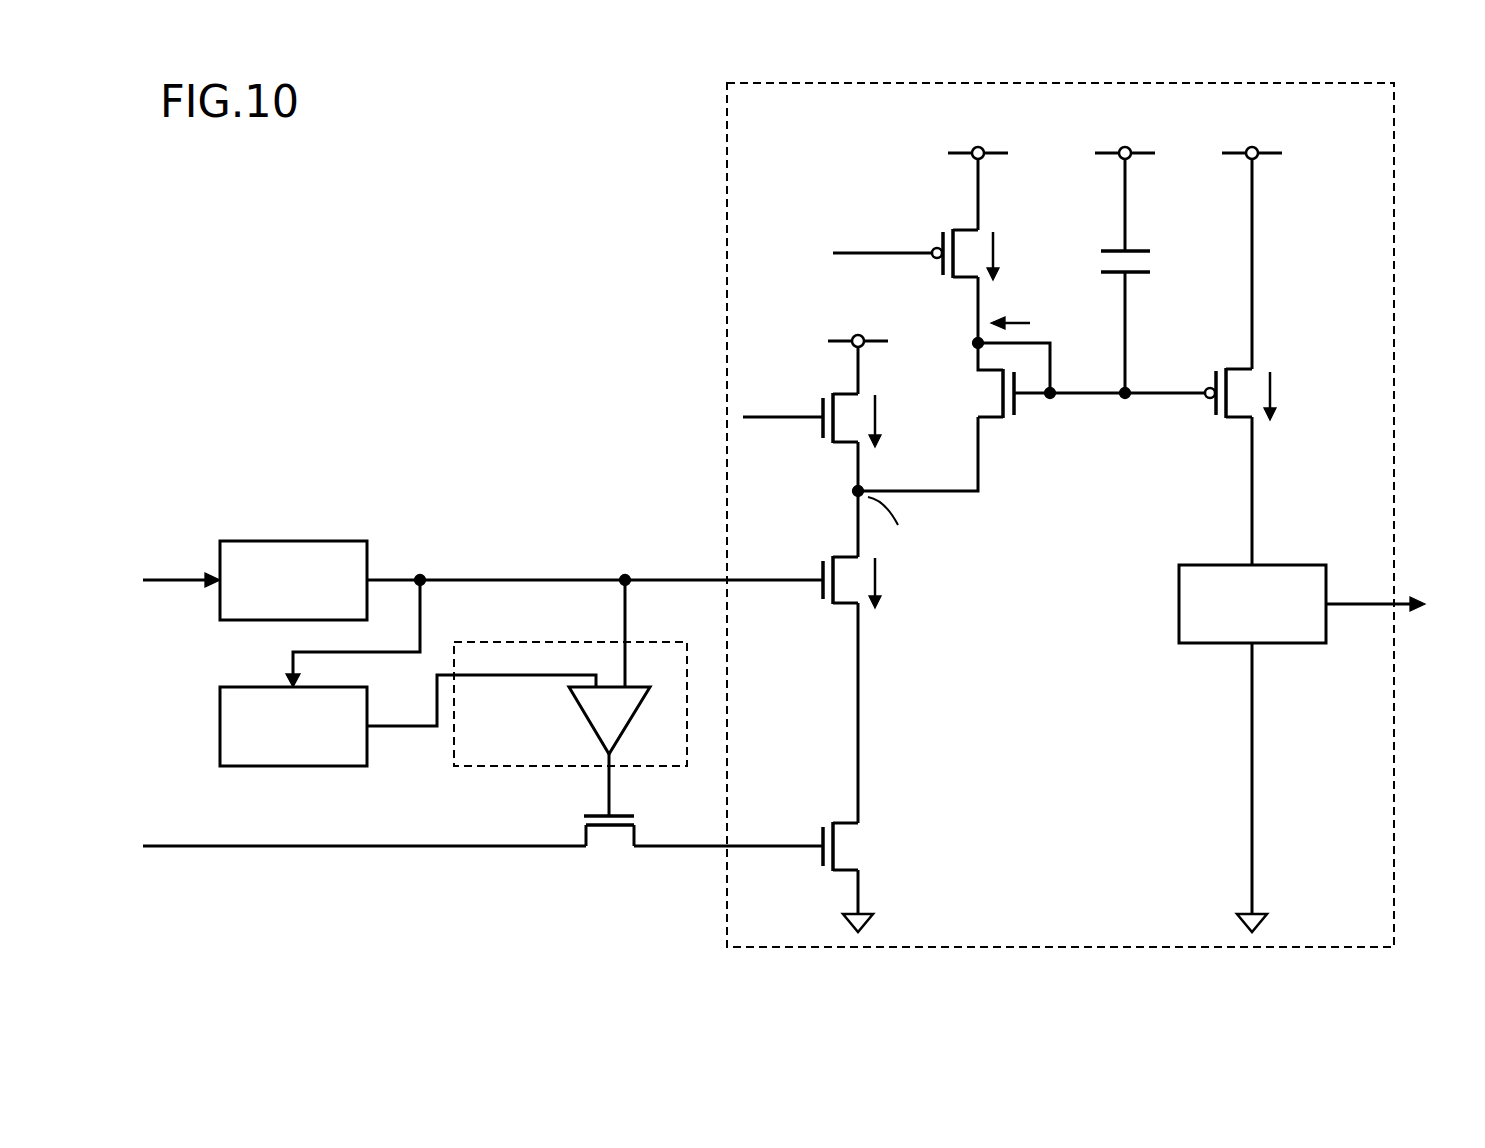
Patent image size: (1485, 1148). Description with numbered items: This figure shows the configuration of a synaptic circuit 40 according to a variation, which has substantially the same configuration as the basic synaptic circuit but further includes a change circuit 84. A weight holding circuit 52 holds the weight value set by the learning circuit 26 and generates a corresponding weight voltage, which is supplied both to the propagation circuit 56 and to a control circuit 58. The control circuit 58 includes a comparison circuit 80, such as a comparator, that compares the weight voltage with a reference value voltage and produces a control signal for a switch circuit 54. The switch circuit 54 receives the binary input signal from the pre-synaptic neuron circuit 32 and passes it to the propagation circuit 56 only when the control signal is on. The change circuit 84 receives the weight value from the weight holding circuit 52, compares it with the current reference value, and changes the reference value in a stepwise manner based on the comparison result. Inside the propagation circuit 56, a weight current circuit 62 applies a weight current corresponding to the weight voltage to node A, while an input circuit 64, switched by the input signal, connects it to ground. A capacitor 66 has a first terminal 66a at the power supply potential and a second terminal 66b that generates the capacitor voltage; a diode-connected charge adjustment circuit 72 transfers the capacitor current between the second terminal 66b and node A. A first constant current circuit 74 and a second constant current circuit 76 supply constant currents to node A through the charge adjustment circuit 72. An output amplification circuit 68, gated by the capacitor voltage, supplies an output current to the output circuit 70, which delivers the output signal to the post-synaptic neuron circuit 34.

The synaptic circuit 40 is at (783, 495).
The propagation circuit 56 is at (1185, 83).
The weight holding circuit 52 is at (336, 541).
The change circuit 84 is at (257, 687).
The control circuit 58 is at (582, 698).
The comparison circuit 80 is at (640, 687).
The switch circuit 54 is at (582, 822).
The learning circuit 26 is at (166, 573).
The pre-synaptic neuron circuit 32 is at (349, 837).
The post-synaptic neuron circuit 34 is at (1391, 598).
The weight current circuit 62 is at (830, 552).
The input circuit 64 is at (830, 818).
The capacitor 66 is at (1120, 270).
The first terminal 66a is at (1123, 200).
The second terminal 66b is at (1123, 294).
The output amplification circuit 68 is at (1222, 365).
The output circuit 70 is at (1305, 565).
The charge adjustment circuit 72 is at (1010, 420).
The first constant current circuit 74 is at (950, 226).
The second constant current circuit 76 is at (830, 390).